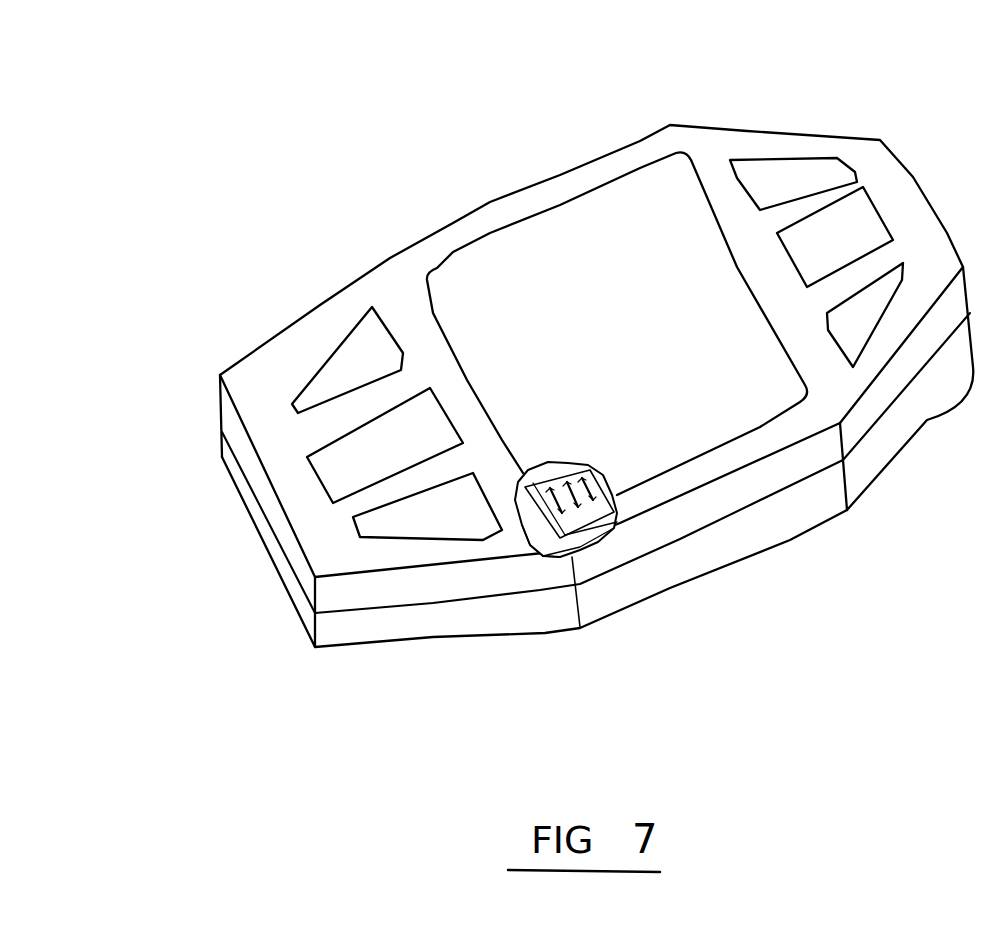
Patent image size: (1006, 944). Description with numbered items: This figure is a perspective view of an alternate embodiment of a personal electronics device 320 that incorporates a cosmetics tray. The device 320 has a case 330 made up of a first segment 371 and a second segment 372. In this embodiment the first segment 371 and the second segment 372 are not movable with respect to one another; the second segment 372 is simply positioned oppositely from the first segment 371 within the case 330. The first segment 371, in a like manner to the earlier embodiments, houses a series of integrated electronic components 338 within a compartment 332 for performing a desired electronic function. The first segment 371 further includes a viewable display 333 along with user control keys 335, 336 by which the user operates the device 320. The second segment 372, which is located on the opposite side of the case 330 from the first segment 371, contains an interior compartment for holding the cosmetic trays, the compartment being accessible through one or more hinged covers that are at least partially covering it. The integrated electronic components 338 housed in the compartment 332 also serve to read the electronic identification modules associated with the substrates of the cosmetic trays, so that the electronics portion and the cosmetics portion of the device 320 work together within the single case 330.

The device 320 is at (423, 122).
The case 330 is at (760, 132).
The viewable display 333 is at (603, 178).
The user control key 335 is at (337, 345).
The user control key 336 is at (307, 476).
The first segment 371 is at (257, 348).
The second segment 372 is at (253, 530).
The compartment 332 is at (533, 532).
The integrated electronic components 338 is at (547, 557).